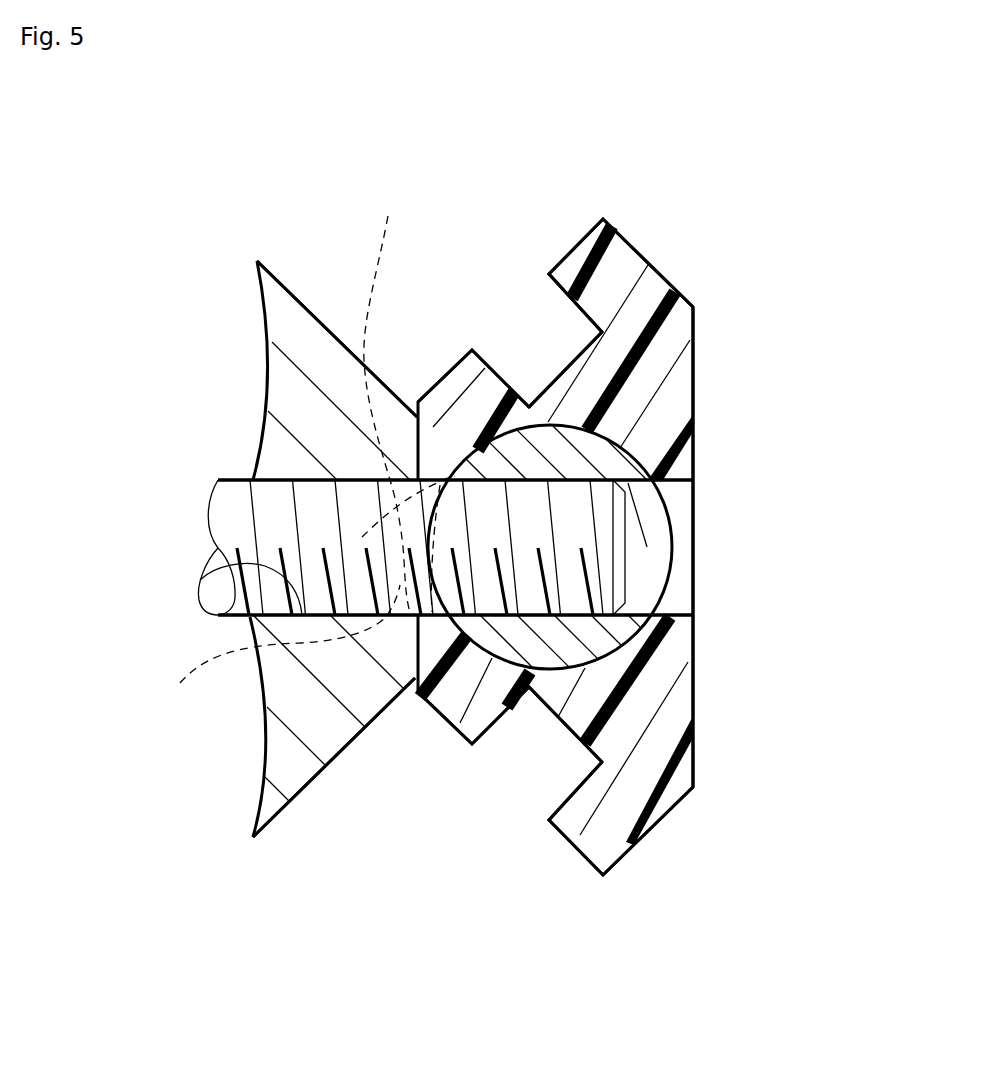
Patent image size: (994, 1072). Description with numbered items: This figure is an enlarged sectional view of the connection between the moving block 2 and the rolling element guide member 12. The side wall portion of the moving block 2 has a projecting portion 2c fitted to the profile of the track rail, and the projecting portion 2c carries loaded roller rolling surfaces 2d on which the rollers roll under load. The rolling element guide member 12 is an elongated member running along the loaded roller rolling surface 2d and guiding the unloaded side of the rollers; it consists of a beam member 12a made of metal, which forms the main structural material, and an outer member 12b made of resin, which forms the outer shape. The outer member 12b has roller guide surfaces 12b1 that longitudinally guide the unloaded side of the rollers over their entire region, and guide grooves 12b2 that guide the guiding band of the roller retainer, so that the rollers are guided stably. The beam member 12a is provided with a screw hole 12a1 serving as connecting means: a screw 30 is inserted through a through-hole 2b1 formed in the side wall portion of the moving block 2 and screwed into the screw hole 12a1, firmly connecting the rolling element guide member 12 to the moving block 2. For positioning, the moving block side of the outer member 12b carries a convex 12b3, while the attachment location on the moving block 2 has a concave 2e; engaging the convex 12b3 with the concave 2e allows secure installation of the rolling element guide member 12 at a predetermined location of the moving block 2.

The moving block 2 is at (284, 275).
The through-hole 2b1 is at (200, 580).
The projecting portion 2c is at (290, 378).
The loaded roller rolling surface 2d is at (322, 323).
The concave 2e is at (279, 648).
The rolling element guide member 12 is at (705, 757).
The beam member 12a is at (592, 635).
The screw hole 12a1 is at (647, 547).
The outer member 12b is at (693, 377).
The roller guide surface 12b1 is at (572, 250).
The guide groove 12b2 is at (572, 363).
The convex 12b3 is at (408, 400).
The screw 30 is at (230, 480).